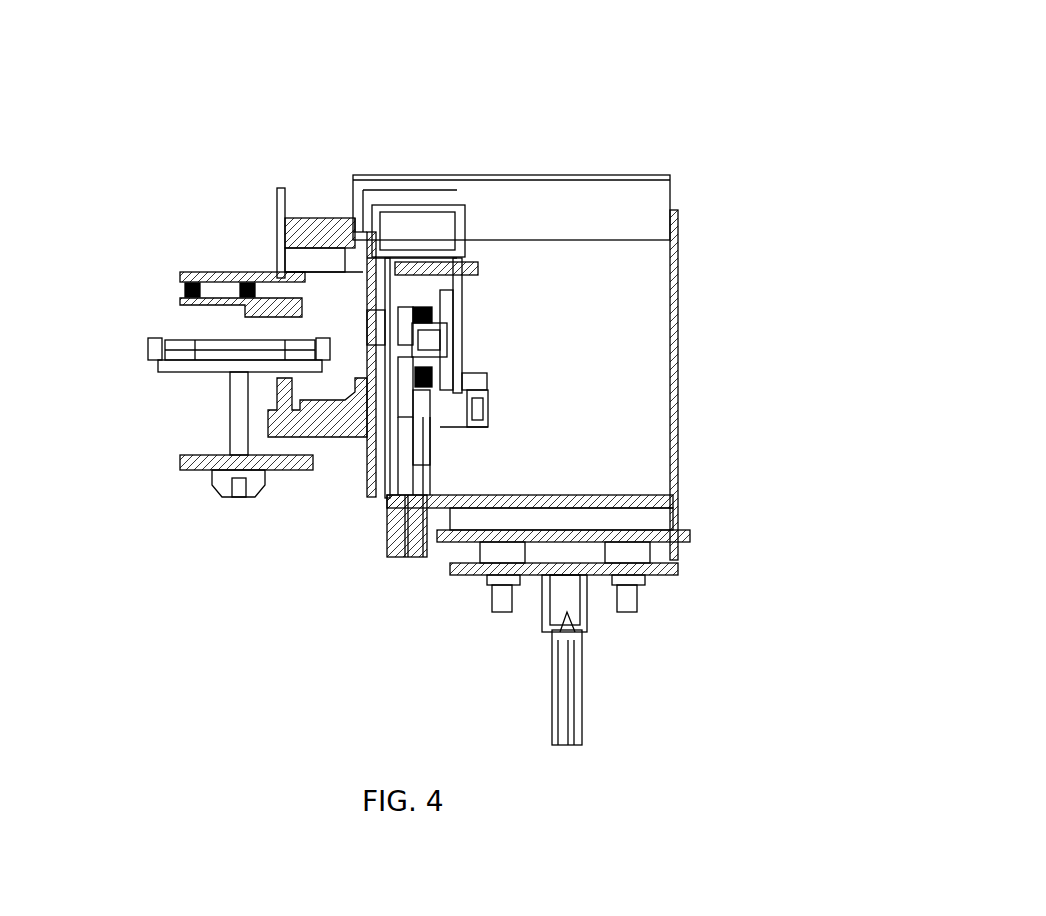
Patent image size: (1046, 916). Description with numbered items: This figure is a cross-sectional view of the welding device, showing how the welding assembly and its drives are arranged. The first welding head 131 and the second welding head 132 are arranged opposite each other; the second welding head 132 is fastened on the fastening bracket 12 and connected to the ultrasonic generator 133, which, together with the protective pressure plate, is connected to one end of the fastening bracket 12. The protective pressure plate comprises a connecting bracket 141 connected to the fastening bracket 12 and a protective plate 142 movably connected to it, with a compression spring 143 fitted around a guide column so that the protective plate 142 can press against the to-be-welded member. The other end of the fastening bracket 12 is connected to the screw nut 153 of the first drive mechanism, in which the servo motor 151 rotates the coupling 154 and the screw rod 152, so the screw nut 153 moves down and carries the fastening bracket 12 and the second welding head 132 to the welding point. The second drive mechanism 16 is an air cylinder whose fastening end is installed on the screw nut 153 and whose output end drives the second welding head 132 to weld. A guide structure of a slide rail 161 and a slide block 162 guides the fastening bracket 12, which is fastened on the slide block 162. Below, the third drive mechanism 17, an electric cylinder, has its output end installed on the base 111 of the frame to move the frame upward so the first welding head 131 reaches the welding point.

The fastening bracket 12 is at (574, 287).
The second drive mechanism 16 is at (575, 378).
The third drive mechanism 17 is at (672, 678).
The base 111 is at (615, 567).
The first welding head 131 is at (178, 418).
The second welding head 132 is at (255, 146).
The ultrasonic generator 133 is at (508, 136).
The connecting bracket 141 is at (171, 233).
The protective plate 142 is at (170, 308).
The compression spring 143 is at (146, 266).
The servo motor 151 is at (588, 498).
The screw rod 152 is at (604, 258).
The screw nut 153 is at (601, 283).
The coupling 154 is at (586, 460).
The slide rail 161 is at (615, 335).
The slide block 162 is at (199, 505).